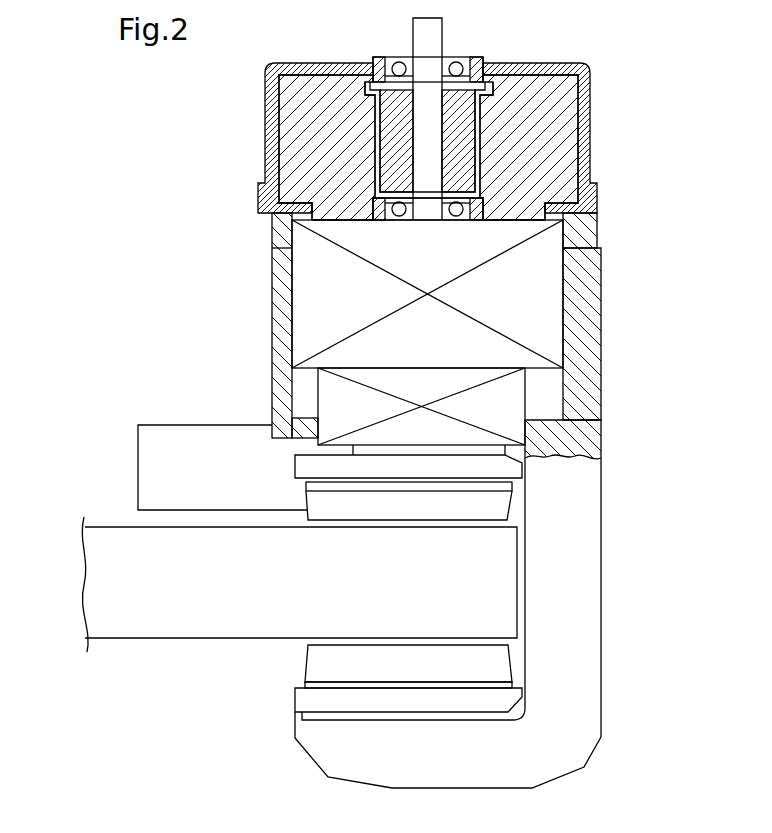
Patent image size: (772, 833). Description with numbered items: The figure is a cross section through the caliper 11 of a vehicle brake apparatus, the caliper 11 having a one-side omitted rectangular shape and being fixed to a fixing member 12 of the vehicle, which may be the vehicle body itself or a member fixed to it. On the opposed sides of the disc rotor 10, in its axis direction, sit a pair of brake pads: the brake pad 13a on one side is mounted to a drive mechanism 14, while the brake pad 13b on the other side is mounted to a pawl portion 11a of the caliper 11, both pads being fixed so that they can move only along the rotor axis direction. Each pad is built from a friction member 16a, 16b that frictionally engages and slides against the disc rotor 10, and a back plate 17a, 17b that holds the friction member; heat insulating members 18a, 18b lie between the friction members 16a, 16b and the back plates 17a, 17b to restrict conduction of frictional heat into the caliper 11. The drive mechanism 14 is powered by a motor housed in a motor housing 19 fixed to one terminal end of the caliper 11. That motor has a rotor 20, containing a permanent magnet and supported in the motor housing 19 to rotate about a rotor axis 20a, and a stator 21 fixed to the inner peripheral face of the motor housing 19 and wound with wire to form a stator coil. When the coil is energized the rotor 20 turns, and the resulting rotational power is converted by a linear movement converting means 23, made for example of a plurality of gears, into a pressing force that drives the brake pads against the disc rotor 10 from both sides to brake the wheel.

The disc rotor 10 is at (140, 640).
The caliper 11 is at (603, 600).
The pawl portion 11a is at (297, 728).
The fixing member 12 is at (138, 462).
The brake pad 13a is at (513, 502).
The brake pad 13b is at (512, 653).
The drive mechanism 14 is at (327, 393).
The friction member 16a is at (357, 512).
The friction member 16b is at (306, 655).
The back plate 17a is at (297, 460).
The back plate 17b is at (296, 697).
The heat insulating member 18a is at (306, 486).
The heat insulating member 18b is at (512, 685).
The motor housing 19 is at (592, 86).
The rotor 20 is at (376, 130).
The rotor axis 20a is at (443, 31).
The stator 21 is at (566, 150).
The linear movement converting means 23 is at (306, 305).